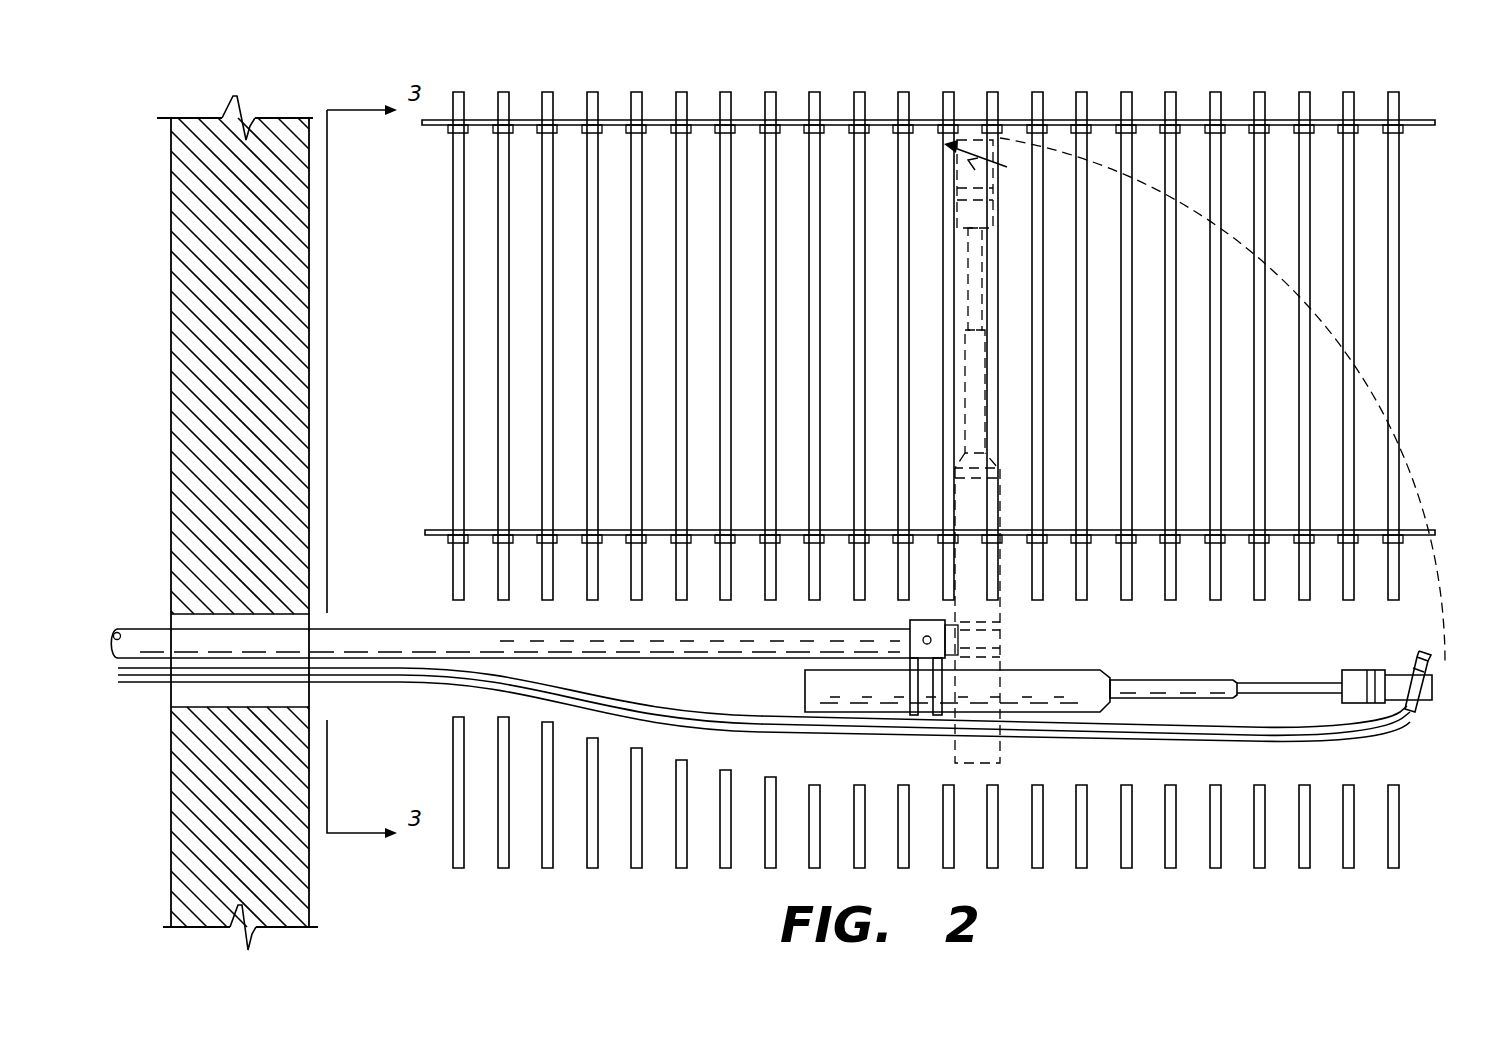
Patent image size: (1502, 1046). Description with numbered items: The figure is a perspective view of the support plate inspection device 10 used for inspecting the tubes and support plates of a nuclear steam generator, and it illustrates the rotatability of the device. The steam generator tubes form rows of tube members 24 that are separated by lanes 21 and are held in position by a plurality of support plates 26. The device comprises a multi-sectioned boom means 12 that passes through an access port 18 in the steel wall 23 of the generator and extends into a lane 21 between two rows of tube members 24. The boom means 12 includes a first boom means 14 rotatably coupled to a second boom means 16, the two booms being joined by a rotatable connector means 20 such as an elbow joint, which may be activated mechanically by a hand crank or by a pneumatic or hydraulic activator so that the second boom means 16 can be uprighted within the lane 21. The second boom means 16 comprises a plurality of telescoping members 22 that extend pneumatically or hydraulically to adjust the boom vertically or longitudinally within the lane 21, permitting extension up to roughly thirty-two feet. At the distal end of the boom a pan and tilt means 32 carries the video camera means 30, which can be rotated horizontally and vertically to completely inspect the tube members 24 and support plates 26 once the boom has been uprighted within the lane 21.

The support plate inspection device 10 is at (761, 698).
The boom means 12 is at (540, 624).
The first boom means 14 is at (422, 629).
The second boom means 16 is at (1045, 660).
The access port 18 is at (293, 691).
The rotatable connector means 20 is at (922, 620).
The lane 21 is at (1226, 412).
The telescoping members 22 is at (1197, 677).
The wall 23 is at (170, 163).
The tube members 24 is at (463, 103).
The support plates 26 is at (660, 118).
The video camera means 30 is at (1433, 670).
The pan and tilt means 32 is at (1435, 688).